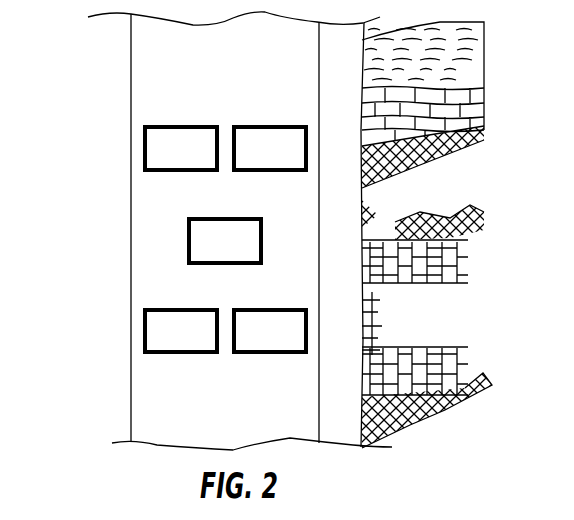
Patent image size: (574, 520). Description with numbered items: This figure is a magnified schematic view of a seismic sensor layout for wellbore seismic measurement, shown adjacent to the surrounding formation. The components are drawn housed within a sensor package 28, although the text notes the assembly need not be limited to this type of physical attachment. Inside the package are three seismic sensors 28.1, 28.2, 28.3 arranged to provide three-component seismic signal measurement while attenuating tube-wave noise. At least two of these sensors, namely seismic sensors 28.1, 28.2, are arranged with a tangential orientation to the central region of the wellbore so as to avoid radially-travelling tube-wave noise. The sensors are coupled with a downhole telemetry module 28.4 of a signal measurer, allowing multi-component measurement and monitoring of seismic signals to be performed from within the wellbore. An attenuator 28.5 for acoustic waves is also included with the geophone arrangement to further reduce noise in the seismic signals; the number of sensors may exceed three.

The sensor package 28 is at (131, 93).
The seismic sensor 28.1 is at (197, 158).
The seismic sensor 28.2 is at (286, 158).
The seismic sensor 28.3 is at (197, 340).
The downhole telemetry module 28.4 is at (286, 340).
The attenuator 28.5 is at (241, 250).